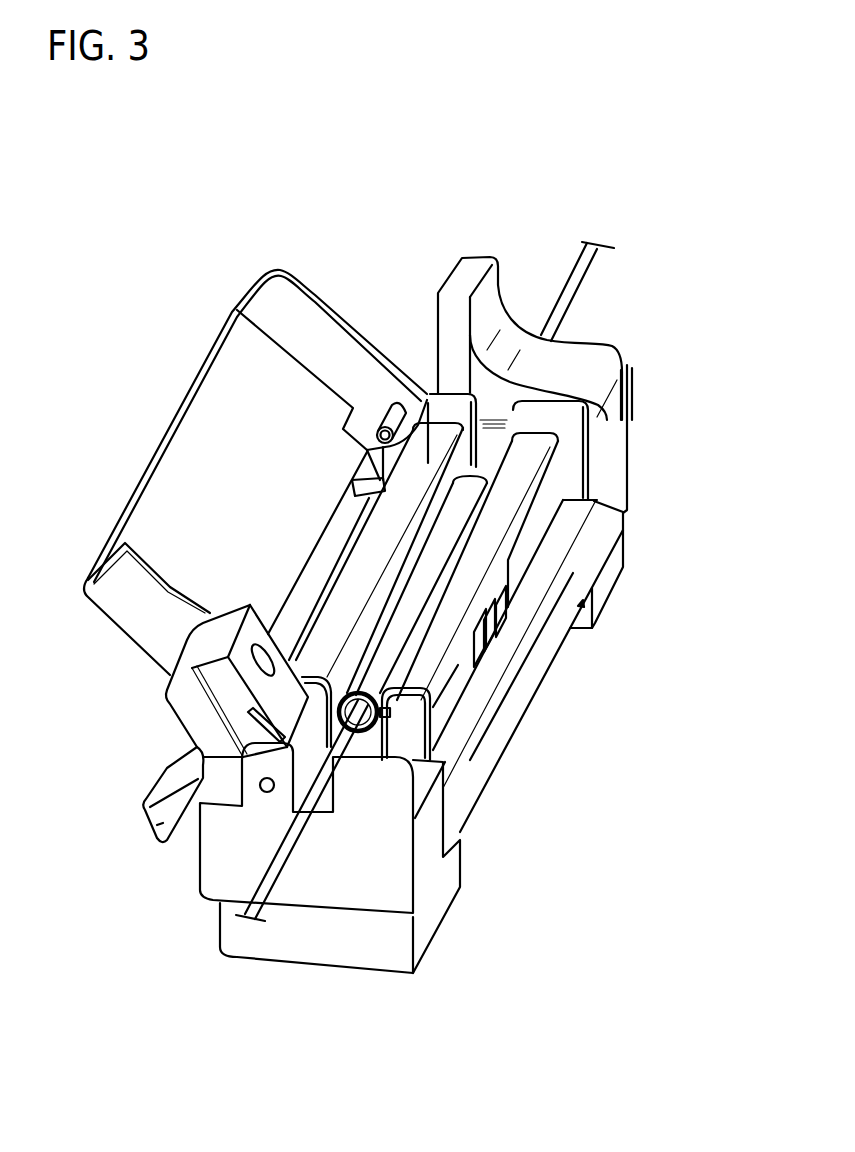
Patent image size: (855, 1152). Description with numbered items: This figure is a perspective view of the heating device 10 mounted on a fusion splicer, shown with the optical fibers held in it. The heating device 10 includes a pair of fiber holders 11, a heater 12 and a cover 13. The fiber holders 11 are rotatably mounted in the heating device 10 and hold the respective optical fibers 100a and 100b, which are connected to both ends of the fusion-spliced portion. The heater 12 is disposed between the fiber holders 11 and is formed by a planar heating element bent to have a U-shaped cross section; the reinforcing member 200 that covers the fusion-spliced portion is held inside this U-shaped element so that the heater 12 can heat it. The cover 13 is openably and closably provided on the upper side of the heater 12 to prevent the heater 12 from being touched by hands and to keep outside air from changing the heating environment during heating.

The heating device 10 is at (370, 307).
The fiber holder 11 is at (488, 296).
The heater 12 is at (378, 710).
The cover 13 is at (198, 423).
The optical fiber 100a is at (263, 873).
The optical fiber 100b is at (588, 284).
The reinforcing member 200 is at (407, 623).